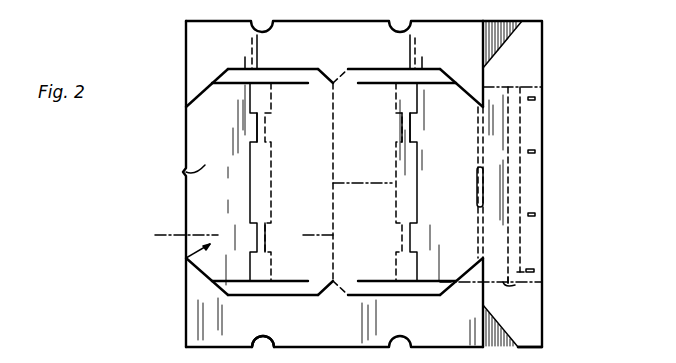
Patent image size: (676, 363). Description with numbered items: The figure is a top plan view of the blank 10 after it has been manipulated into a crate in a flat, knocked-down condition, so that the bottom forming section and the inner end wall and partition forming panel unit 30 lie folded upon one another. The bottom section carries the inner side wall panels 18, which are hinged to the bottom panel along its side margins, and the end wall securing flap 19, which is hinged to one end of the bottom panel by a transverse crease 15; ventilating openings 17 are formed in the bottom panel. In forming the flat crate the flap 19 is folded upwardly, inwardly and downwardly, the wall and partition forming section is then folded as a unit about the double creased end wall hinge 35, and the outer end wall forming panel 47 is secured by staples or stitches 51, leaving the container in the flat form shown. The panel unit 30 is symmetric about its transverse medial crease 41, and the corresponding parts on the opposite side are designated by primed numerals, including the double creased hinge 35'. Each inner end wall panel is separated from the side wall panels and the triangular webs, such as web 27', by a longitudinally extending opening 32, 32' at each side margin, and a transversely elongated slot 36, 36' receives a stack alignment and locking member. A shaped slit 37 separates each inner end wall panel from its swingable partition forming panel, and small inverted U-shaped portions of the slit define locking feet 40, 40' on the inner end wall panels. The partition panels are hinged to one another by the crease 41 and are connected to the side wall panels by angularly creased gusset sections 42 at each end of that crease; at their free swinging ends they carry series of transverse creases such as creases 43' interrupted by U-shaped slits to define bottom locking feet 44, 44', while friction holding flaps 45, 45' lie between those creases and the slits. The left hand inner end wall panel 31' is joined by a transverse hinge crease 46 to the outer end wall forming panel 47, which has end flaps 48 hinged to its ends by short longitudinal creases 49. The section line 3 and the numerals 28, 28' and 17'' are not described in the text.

The blank 10 is at (34, 6).
The first panel 28 is at (334, 16).
The second panel 28' is at (458, 75).
The ventilating openings 17 is at (334, 349).
The bottom notch 17'' is at (283, 331).
The double creased end wall hinge 35 is at (167, 184).
The double creased end wall hinge (primed) 35' is at (498, 139).
The transverse hinge crease 46 is at (482, 227).
The longitudinal creases 49 is at (530, 56).
The staples or stitches 51 is at (483, 73).
The inner side wall panels 18 is at (495, 335).
The end wall securing flap 19 is at (520, 138).
The transverse creases 15 is at (538, 98).
The outer end wall forming panel 47 is at (503, 286).
The end flaps 48 is at (530, 318).
The inner end wall panel (primed) 31' is at (501, 263).
The transversely elongated slot (primed) 36' is at (496, 181).
The inner end wall and partition forming panel unit 30 is at (183, 259).
The longitudinally extending opening 32 is at (258, 187).
The longitudinally extending opening (primed) 32' is at (411, 190).
The angularly creased gusset sections 42 is at (348, 70).
The triangular web (primed) 27' is at (458, 268).
The transverse medial crease 41 is at (333, 148).
The transversely extending creases (primed) 43' is at (364, 198).
The section line 3 is at (580, 183).
The shaped slit 37 is at (250, 186).
The locking feet 40 is at (244, 182).
The locking feet (primed) 40' is at (424, 182).
The friction holding flap 45 is at (278, 141).
The friction holding flap (primed) 45' is at (432, 137).
The bottom locking feet 44 is at (282, 228).
The bottom locking feet (primed) 44' is at (376, 119).
The transversely elongated slot 36 is at (204, 164).